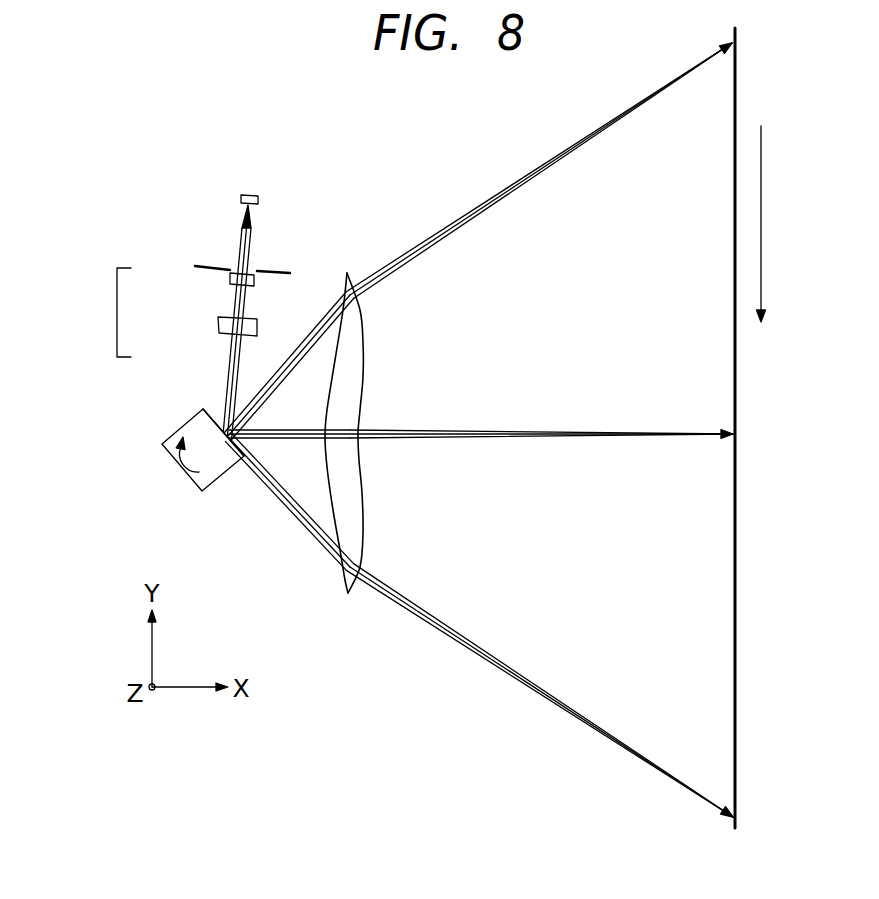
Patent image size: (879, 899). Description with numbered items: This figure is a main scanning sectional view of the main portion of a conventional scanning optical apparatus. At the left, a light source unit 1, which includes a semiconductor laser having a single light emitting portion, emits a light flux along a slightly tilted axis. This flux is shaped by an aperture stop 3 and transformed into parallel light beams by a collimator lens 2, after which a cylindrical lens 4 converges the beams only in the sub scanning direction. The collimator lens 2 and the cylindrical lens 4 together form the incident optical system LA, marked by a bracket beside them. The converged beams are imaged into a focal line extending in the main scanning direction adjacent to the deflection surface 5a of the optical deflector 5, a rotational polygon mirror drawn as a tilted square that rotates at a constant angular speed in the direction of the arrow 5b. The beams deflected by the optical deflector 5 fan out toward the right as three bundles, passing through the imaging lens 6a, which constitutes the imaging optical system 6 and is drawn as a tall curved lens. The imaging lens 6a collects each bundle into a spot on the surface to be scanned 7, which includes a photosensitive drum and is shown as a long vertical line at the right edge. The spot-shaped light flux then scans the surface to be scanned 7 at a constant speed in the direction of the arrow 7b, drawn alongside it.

The light source unit 1 is at (241, 199).
The collimator lens 2 is at (230, 278).
The aperture stop 3 is at (207, 265).
The cylindrical lens 4 is at (218, 326).
The incident optical system LA is at (104, 312).
The optical deflector (rotational polygon mirror) 5 is at (180, 467).
The deflection surface 5a is at (218, 413).
The arrow (rotation direction) 5b is at (200, 456).
The imaging optical system 6 is at (347, 273).
The imaging lens 6a is at (358, 528).
The surface to be scanned 7 is at (737, 62).
The arrow (scanning direction) 7b is at (763, 193).